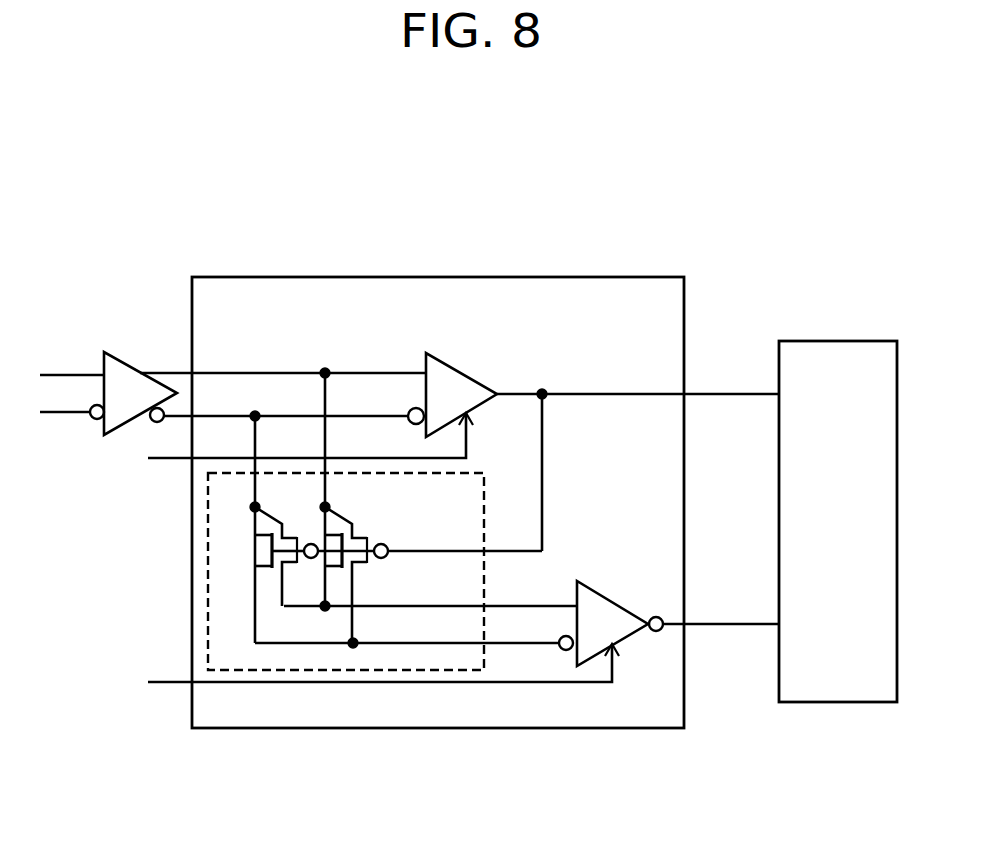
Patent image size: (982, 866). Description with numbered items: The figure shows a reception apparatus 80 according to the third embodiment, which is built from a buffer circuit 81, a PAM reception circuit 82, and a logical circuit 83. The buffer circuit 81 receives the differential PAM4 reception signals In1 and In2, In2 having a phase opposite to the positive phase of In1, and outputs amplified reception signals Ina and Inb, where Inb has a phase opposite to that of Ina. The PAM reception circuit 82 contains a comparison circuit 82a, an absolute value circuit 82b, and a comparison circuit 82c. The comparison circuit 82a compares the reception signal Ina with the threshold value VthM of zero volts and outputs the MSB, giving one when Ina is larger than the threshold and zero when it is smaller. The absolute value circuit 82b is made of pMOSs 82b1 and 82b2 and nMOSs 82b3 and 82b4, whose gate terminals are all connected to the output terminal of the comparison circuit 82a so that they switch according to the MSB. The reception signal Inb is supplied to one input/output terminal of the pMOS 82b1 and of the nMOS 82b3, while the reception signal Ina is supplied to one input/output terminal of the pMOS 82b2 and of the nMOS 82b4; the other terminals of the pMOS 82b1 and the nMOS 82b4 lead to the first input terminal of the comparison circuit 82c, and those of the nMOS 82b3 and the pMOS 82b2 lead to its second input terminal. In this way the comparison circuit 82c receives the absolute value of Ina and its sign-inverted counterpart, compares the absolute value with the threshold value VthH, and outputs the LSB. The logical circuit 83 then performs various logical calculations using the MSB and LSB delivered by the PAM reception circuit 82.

The reception apparatus 80 is at (878, 216).
The buffer circuit 81 is at (118, 359).
The PAM reception circuit 82 is at (627, 277).
The comparison circuit 82a is at (458, 370).
The absolute value circuit 82b is at (475, 473).
The pMOS 82b1 is at (283, 533).
The pMOS 82b2 is at (353, 533).
The nMOS 82b3 is at (258, 568).
The nMOS 82b4 is at (331, 567).
The comparison circuit 82c is at (586, 585).
The logical circuit 83 is at (824, 341).